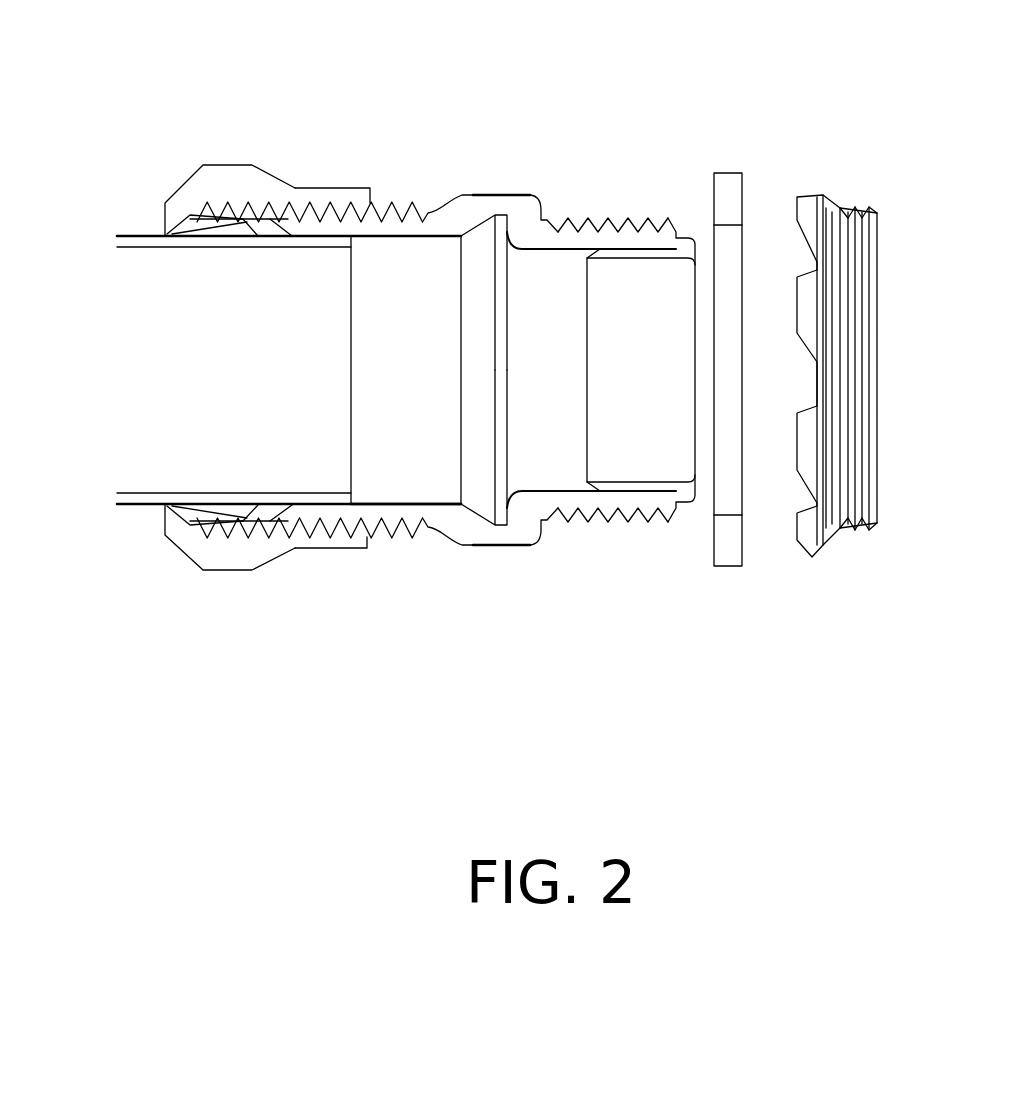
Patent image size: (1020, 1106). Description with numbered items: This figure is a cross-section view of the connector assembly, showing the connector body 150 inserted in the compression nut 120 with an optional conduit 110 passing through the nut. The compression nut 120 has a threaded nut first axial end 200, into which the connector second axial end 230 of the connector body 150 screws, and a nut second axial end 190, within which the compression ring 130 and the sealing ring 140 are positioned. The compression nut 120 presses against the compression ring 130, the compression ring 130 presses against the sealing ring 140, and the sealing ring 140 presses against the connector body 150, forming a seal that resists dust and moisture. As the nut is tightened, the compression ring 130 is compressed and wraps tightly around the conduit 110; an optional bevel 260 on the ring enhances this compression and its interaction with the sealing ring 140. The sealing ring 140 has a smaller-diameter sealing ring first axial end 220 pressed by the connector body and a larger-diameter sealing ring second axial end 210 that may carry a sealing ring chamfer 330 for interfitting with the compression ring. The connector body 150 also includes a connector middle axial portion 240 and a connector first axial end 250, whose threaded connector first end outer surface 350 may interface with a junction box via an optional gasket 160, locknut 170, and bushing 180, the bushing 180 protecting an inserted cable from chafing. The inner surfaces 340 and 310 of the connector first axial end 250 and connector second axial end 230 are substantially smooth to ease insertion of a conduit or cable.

The conduit 110 is at (128, 505).
The compression nut 120 is at (365, 543).
The compression ring 130 is at (213, 518).
The sealing ring 140 is at (264, 228).
The connector body 150 is at (498, 195).
The gasket 160 is at (731, 135).
The locknut 170 is at (843, 135).
The bushing 180 is at (685, 503).
The nut second axial end 190 is at (221, 165).
The nut first axial end 200 is at (331, 188).
The sealing ring second axial end 210 is at (235, 520).
The sealing ring first axial end 220 is at (287, 523).
The connector second axial end 230 is at (397, 228).
The connector middle axial portion 240 is at (500, 527).
The connector first axial end 250 is at (609, 240).
The bevel 260 is at (198, 513).
The inner surface of the connector second axial end 310 is at (417, 504).
The sealing ring chamfer 330 is at (257, 515).
The inner surface of the connector first axial end 340 is at (537, 493).
The connector first end outer surface 350 is at (630, 512).